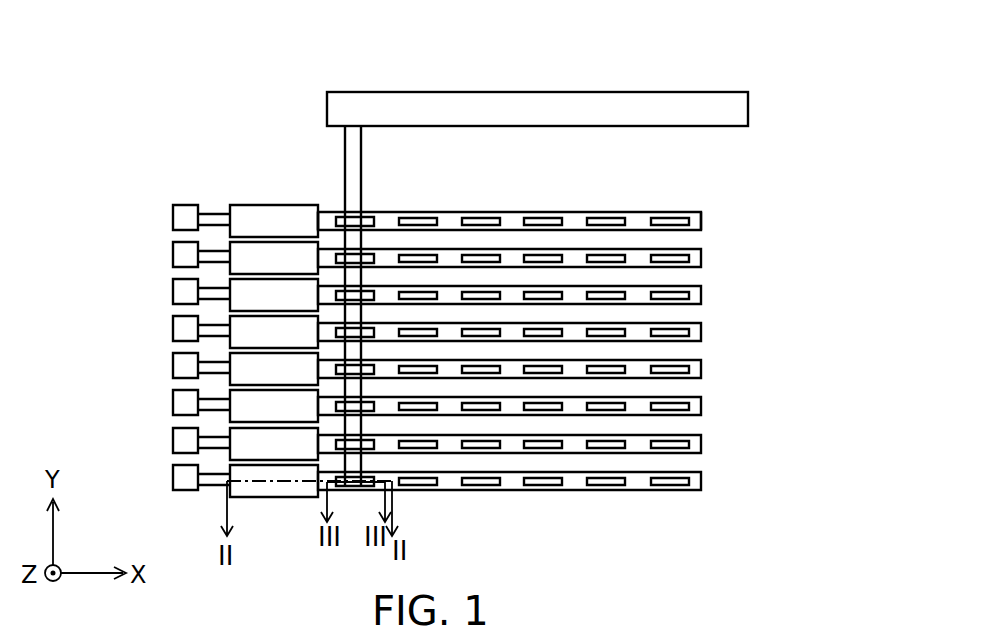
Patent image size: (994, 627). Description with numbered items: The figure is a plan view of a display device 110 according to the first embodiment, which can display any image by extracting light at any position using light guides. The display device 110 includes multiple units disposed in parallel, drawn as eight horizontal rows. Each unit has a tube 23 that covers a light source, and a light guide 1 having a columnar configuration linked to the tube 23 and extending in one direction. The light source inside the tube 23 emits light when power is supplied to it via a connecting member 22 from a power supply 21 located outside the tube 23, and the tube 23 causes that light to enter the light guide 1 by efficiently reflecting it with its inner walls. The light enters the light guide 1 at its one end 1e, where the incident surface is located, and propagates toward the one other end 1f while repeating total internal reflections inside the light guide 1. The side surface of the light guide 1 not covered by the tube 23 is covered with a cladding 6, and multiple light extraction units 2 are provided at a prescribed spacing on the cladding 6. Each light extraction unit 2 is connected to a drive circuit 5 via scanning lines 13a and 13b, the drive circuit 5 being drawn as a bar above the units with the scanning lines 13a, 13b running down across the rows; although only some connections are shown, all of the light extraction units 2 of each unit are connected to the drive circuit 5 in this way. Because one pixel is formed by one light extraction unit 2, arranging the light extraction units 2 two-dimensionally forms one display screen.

The display device 110 is at (766, 73).
The drive circuit 5 is at (640, 107).
The scanning line 13a is at (345, 147).
The scanning line 13b is at (362, 187).
The light guide 1 is at (703, 220).
The one end 1e is at (307, 222).
The one other end 1f is at (701, 212).
The light extraction unit 2 is at (462, 217).
The cladding 6 is at (511, 222).
The power supply 21 is at (186, 214).
The connecting member 22 is at (215, 218).
The tube 23 is at (268, 222).